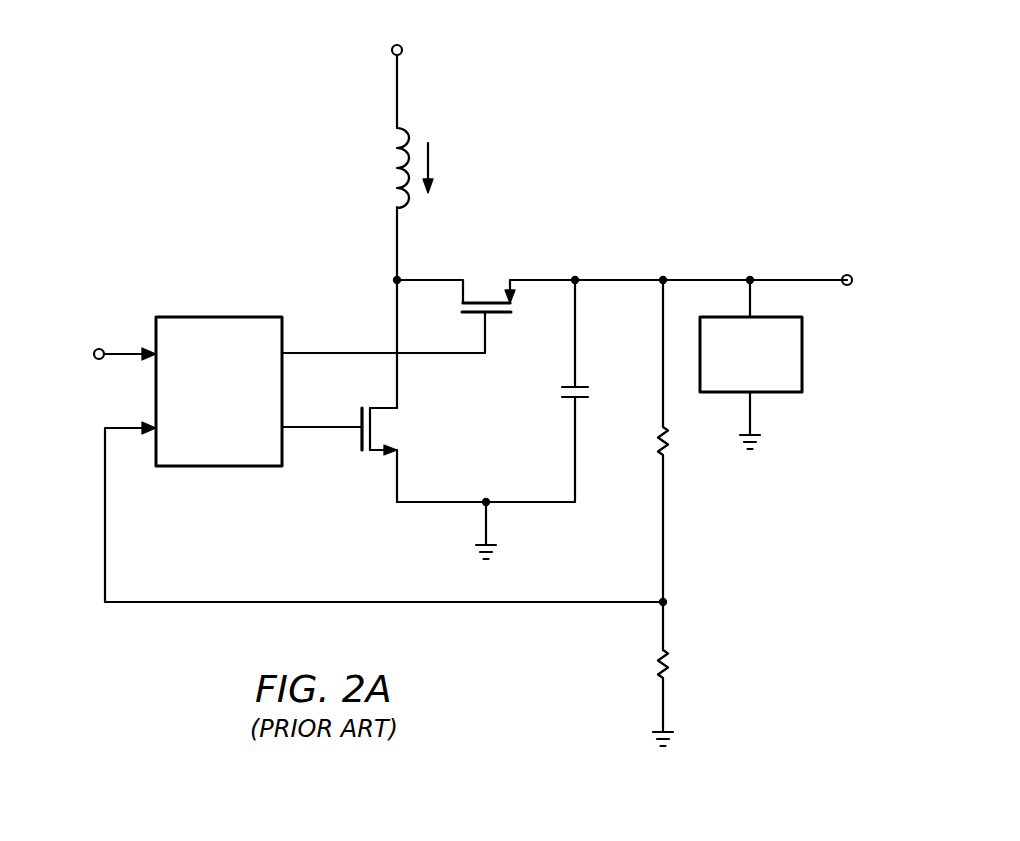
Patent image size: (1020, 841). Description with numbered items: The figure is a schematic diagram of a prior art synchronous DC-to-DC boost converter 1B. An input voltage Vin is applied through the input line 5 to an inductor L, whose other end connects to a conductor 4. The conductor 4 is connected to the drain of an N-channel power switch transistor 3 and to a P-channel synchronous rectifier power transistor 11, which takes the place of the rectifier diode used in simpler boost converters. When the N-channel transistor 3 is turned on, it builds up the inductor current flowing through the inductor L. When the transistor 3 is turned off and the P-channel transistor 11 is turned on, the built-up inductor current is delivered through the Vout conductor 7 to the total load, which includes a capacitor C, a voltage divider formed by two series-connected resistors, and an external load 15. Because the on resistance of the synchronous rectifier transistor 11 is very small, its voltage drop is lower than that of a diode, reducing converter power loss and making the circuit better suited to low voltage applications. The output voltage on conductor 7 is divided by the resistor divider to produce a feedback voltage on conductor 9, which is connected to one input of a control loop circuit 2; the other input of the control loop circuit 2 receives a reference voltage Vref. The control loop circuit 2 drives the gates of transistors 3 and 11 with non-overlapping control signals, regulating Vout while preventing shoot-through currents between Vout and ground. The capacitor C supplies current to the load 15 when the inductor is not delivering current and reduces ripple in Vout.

The synchronous DC-to-DC boost converter 1B is at (172, 146).
The control loop circuit 2 is at (219, 317).
The N-channel power switch transistor 3 is at (360, 442).
The conductor 4 is at (394, 300).
The input terminal line 5 is at (394, 92).
The Vout conductor 7 is at (620, 279).
The feedback conductor 9 is at (105, 515).
The P-channel synchronous rectifier power transistor 11 is at (496, 316).
The external load 15 is at (802, 355).